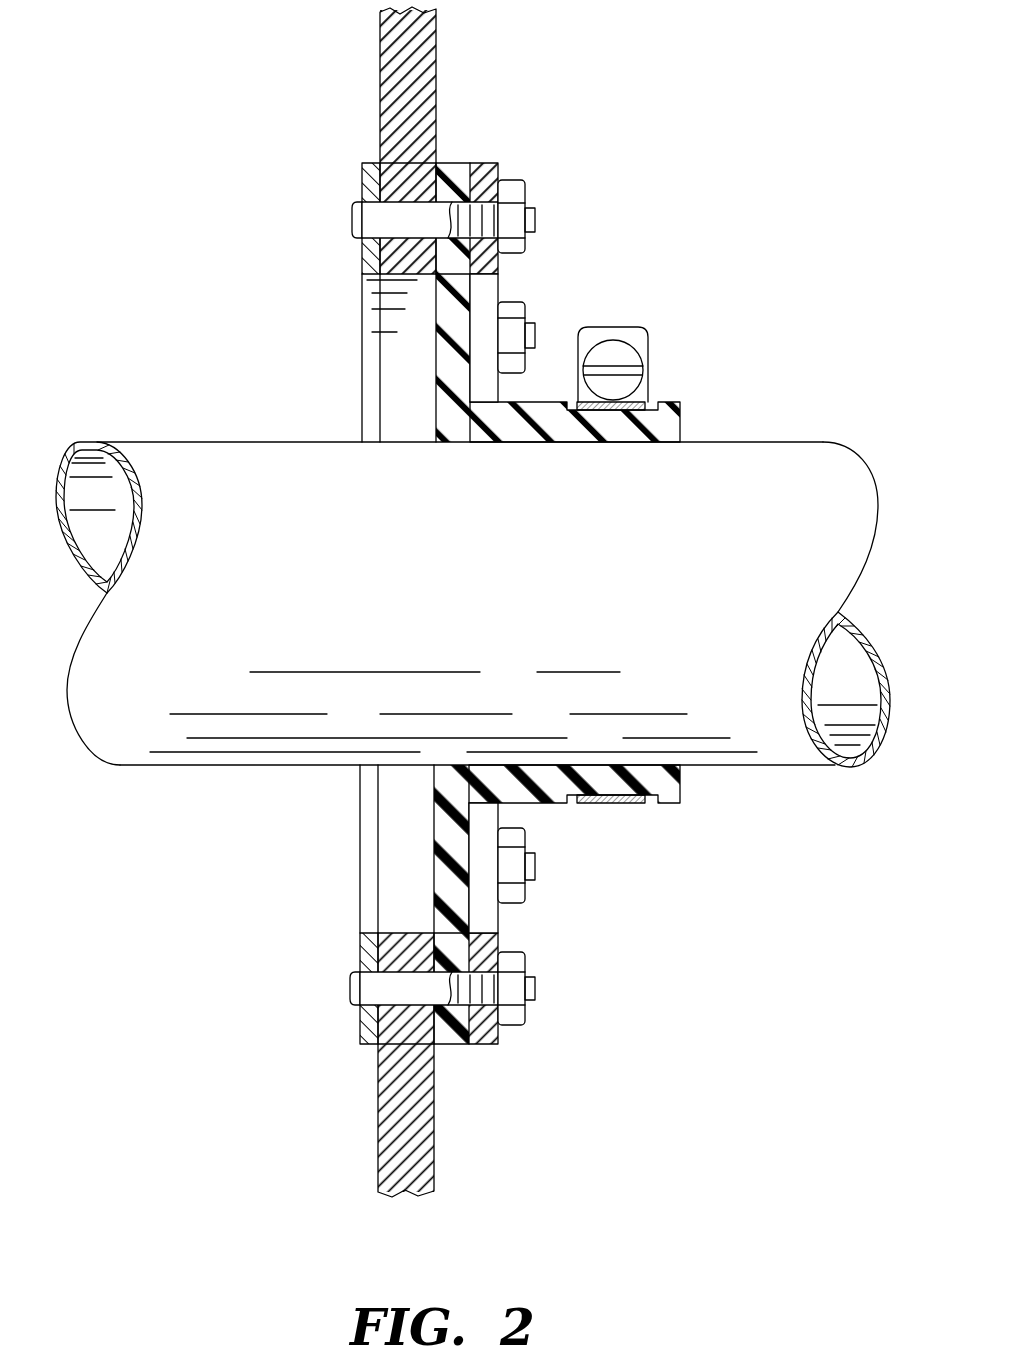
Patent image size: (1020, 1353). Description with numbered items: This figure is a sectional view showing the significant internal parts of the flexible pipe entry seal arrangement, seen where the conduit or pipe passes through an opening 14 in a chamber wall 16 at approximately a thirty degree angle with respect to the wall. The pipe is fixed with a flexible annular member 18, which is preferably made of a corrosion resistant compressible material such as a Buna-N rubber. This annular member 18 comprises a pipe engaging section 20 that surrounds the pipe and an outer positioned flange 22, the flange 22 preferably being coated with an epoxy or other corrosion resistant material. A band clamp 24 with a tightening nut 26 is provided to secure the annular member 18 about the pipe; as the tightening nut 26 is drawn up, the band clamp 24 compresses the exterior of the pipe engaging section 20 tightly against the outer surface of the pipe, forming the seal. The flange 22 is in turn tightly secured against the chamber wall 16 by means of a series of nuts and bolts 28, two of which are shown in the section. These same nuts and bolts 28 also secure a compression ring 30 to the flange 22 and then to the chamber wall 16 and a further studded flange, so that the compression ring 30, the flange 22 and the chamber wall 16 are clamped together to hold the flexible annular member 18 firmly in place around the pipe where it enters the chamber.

The opening 14 is at (403, 318).
The chamber wall 16 is at (423, 73).
The flexible annular member 18 is at (457, 158).
The pipe engaging section 20 is at (676, 428).
The flange 22 is at (451, 367).
The band clamp 24 is at (633, 400).
The tightening nut 26 is at (612, 353).
The nuts and bolts 28 is at (527, 203).
The compression ring 30 is at (487, 300).